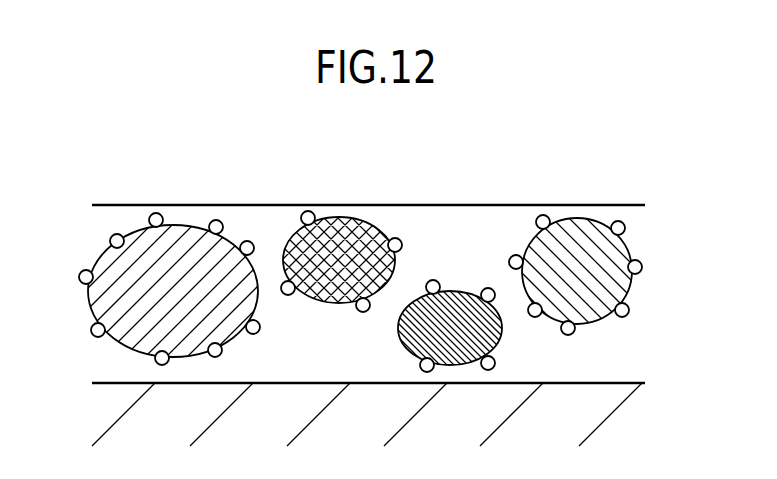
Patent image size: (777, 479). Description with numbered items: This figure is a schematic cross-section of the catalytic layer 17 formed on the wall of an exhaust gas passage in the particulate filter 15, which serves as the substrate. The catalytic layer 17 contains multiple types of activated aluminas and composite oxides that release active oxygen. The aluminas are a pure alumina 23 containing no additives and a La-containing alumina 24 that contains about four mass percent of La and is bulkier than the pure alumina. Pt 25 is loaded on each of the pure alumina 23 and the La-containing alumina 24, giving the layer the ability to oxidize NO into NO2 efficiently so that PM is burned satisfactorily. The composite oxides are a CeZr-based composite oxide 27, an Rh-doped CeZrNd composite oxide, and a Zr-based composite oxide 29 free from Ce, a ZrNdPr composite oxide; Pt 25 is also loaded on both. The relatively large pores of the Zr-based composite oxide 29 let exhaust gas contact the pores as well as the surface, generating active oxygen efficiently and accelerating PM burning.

The particulate filter 15 is at (627, 420).
The catalytic layer 17 is at (627, 346).
The pure alumina 23 is at (580, 227).
The La-containing alumina 24 is at (133, 248).
The Pt 25 is at (215, 220).
The CeZr-based composite oxide 27 is at (332, 220).
The Zr-based composite oxide 29 is at (450, 300).